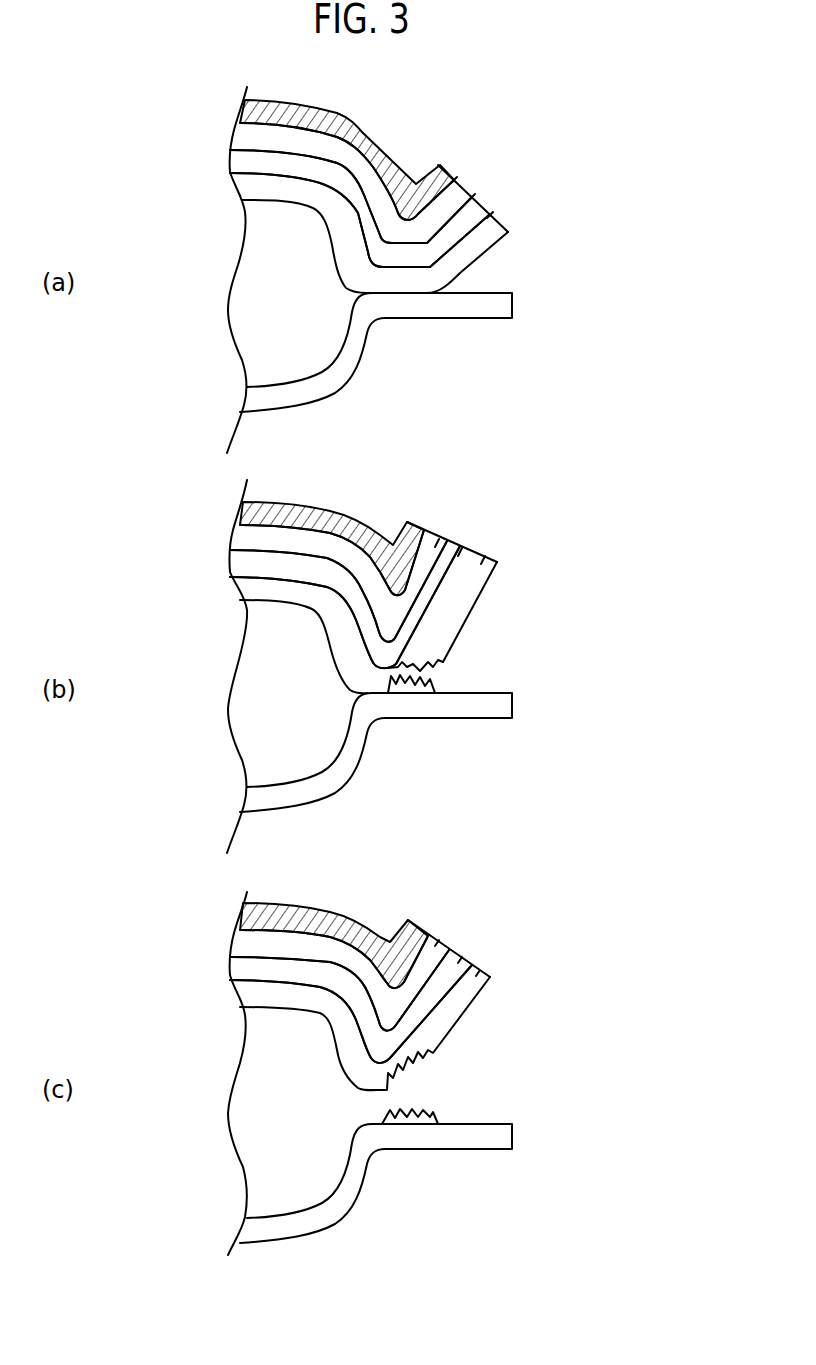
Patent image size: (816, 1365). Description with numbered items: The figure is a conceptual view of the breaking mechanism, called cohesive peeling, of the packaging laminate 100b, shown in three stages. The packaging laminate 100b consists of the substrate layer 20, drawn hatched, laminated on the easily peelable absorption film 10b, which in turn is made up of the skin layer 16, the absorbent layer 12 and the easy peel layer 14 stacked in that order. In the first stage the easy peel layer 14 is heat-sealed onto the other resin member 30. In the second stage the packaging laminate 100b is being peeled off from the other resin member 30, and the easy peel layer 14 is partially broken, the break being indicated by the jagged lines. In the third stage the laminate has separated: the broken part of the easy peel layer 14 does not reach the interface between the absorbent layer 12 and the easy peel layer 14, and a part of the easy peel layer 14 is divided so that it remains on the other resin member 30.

The substrate layer 20 is at (447, 172).
The skin layer 16 is at (471, 198).
The absorbent layer 12 is at (489, 215).
The easy peel layer 14 is at (415, 631).
The easily peelable absorption film 10b is at (449, 606).
The packaging laminate 100b is at (492, 589).
The other resin member 30 is at (512, 305).